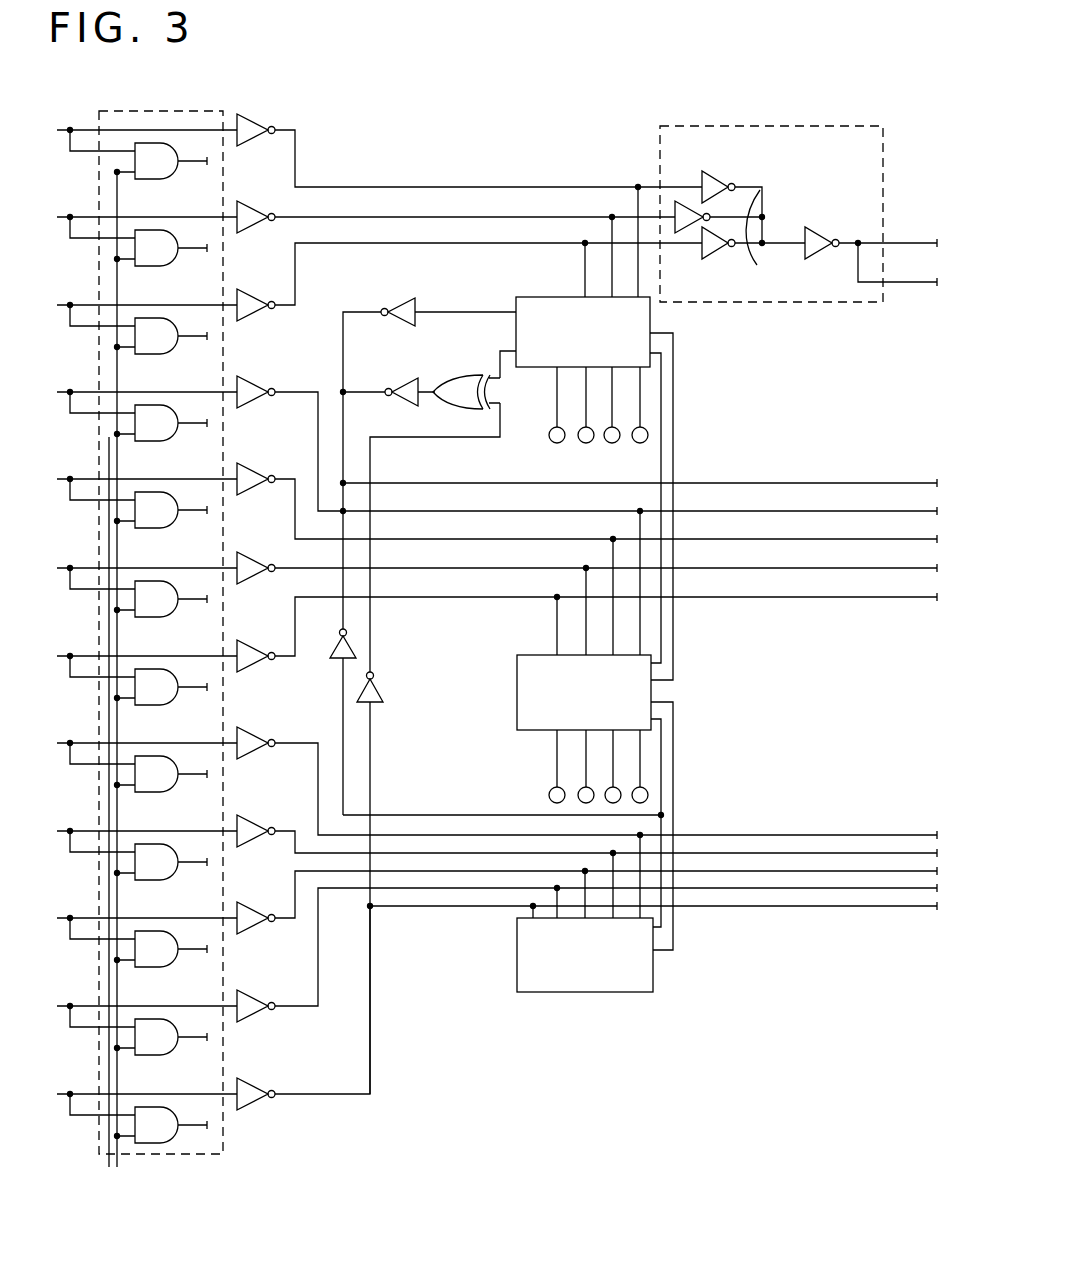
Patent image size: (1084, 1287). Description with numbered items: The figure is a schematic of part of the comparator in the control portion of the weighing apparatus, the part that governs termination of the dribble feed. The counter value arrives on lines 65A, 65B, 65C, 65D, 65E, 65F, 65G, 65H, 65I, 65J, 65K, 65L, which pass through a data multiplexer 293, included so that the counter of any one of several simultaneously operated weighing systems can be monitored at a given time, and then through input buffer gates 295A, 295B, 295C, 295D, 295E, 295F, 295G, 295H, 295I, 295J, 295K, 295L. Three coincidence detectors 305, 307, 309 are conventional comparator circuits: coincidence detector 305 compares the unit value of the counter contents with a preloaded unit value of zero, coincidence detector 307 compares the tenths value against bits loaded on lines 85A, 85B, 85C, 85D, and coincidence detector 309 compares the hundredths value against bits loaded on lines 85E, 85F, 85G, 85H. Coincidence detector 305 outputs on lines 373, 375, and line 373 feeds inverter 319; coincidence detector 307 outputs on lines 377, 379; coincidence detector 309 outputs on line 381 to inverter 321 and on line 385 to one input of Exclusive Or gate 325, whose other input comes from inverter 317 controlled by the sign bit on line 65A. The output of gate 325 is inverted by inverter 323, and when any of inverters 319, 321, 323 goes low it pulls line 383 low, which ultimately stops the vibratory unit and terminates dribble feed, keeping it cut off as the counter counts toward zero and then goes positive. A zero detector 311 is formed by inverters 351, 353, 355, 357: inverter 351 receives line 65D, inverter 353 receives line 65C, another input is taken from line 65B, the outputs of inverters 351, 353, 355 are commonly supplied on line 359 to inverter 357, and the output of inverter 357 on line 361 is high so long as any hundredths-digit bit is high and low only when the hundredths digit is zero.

The line 65A is at (93, 1068).
The line 65B is at (80, 315).
The line 65C is at (80, 227).
The line 65D is at (80, 140).
The line 65E is at (80, 666).
The line 65F is at (93, 542).
The line 65G is at (80, 489).
The line 65H is at (80, 402).
The line 65I is at (93, 980).
The line 65J is at (93, 892).
The line 65K is at (93, 805).
The line 65L is at (80, 753).
The data multiplexer 293 is at (152, 110).
The input buffer gate 295A is at (256, 1088).
The input buffer gate 295B is at (256, 299).
The input buffer gate 295C is at (256, 211).
The input buffer gate 295D is at (256, 124).
The input buffer gate 295E is at (256, 650).
The input buffer gate 295F is at (256, 562).
The input buffer gate 295G is at (256, 473).
The input buffer gate 295H is at (256, 386).
The input buffer gate 295I is at (256, 1000).
The input buffer gate 295J is at (256, 912).
The input buffer gate 295K is at (256, 825).
The input buffer gate 295L is at (256, 737).
The coincidence detector 305 is at (517, 948).
The coincidence detector 307 is at (530, 655).
The coincidence detector 309 is at (650, 321).
The zero detector circuit 311 is at (738, 125).
The inverter 317 is at (378, 684).
The inverter 319 is at (332, 655).
The inverter 321 is at (410, 272).
The inverter 323 is at (410, 378).
The Exclusive Or gate 325 is at (470, 410).
The inverter 351 is at (735, 150).
The inverter 353 is at (672, 205).
The inverter 355 is at (700, 251).
The inverter 357 is at (820, 250).
The line 359 is at (750, 245).
The line 361 is at (925, 222).
The line 373 is at (661, 815).
The line 375 is at (673, 798).
The line 377 is at (661, 440).
The line 379 is at (673, 405).
The line 381 is at (490, 280).
The line 383 is at (448, 483).
The line 385 is at (499, 352).
The line 85A is at (557, 740).
The line 85B is at (586, 755).
The line 85C is at (613, 742).
The line 85D is at (640, 775).
The line 85E is at (552, 428).
The line 85F is at (583, 443).
The line 85G is at (609, 442).
The line 85H is at (646, 442).